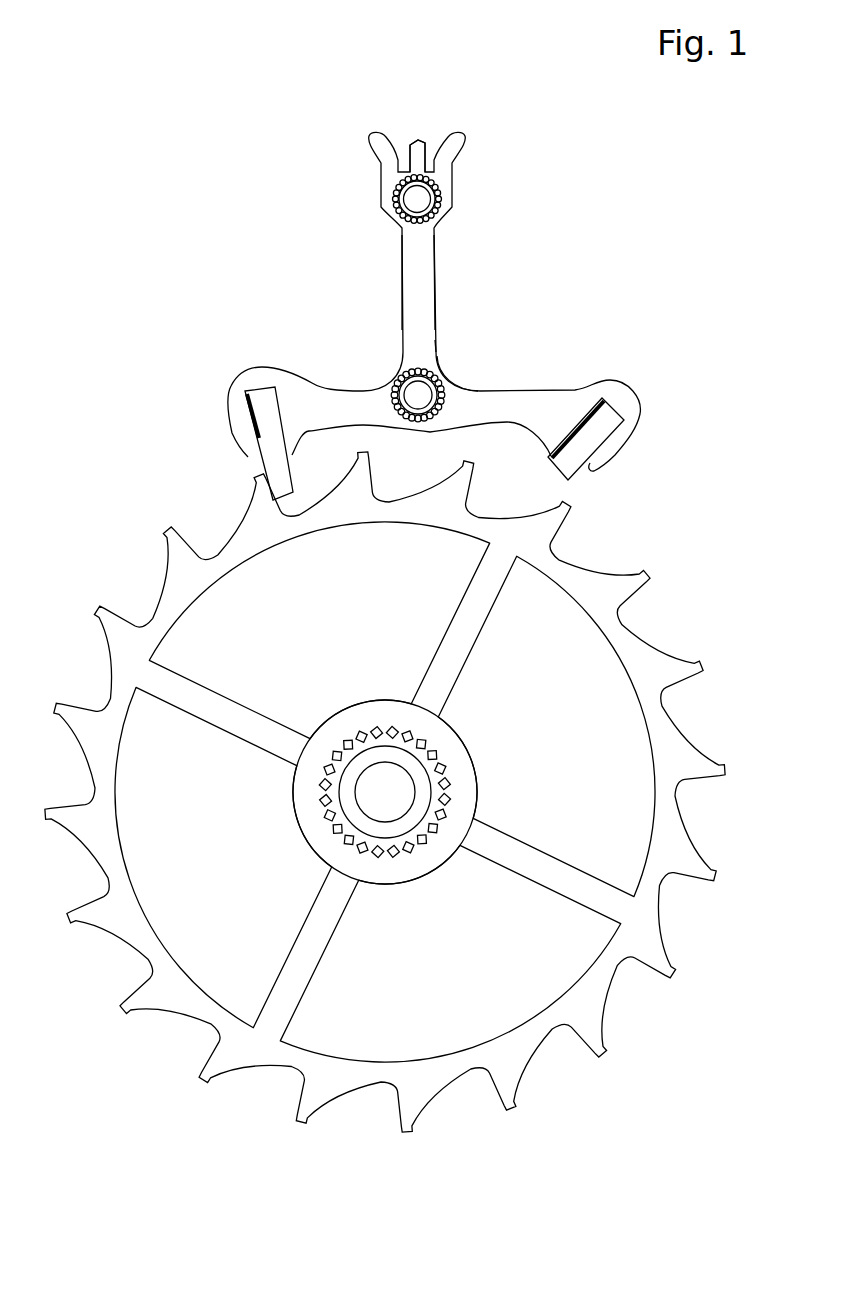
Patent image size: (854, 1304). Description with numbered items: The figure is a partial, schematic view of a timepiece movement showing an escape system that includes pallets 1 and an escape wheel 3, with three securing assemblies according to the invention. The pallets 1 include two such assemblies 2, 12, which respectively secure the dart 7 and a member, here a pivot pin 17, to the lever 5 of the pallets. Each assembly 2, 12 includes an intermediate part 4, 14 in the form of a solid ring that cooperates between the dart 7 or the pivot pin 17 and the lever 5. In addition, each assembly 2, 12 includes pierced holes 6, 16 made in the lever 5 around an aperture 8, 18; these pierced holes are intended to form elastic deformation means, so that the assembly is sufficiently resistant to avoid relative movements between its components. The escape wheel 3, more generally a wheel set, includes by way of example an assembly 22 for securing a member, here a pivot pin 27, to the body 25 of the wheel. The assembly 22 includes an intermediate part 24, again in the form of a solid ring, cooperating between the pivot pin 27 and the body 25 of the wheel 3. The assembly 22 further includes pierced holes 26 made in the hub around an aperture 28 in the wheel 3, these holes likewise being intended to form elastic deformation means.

The pallets 1 is at (655, 255).
The assembly 2 is at (504, 187).
The escape wheel 3 is at (104, 558).
The intermediate part 4 is at (441, 204).
The lever 5 is at (415, 272).
The pierced holes 6 is at (388, 196).
The dart 7 is at (418, 143).
The aperture 8 is at (398, 220).
The assembly 12 is at (463, 365).
The intermediate part 14 is at (457, 393).
The pierced holes 16 is at (439, 355).
The pivot pin 17 is at (412, 403).
The aperture 18 is at (402, 375).
The assembly 22 is at (486, 743).
The intermediate part 24 is at (420, 797).
The body 25 is at (666, 667).
The pierced holes 26 is at (438, 729).
The pivot pin 27 is at (380, 780).
The aperture 28 is at (340, 846).